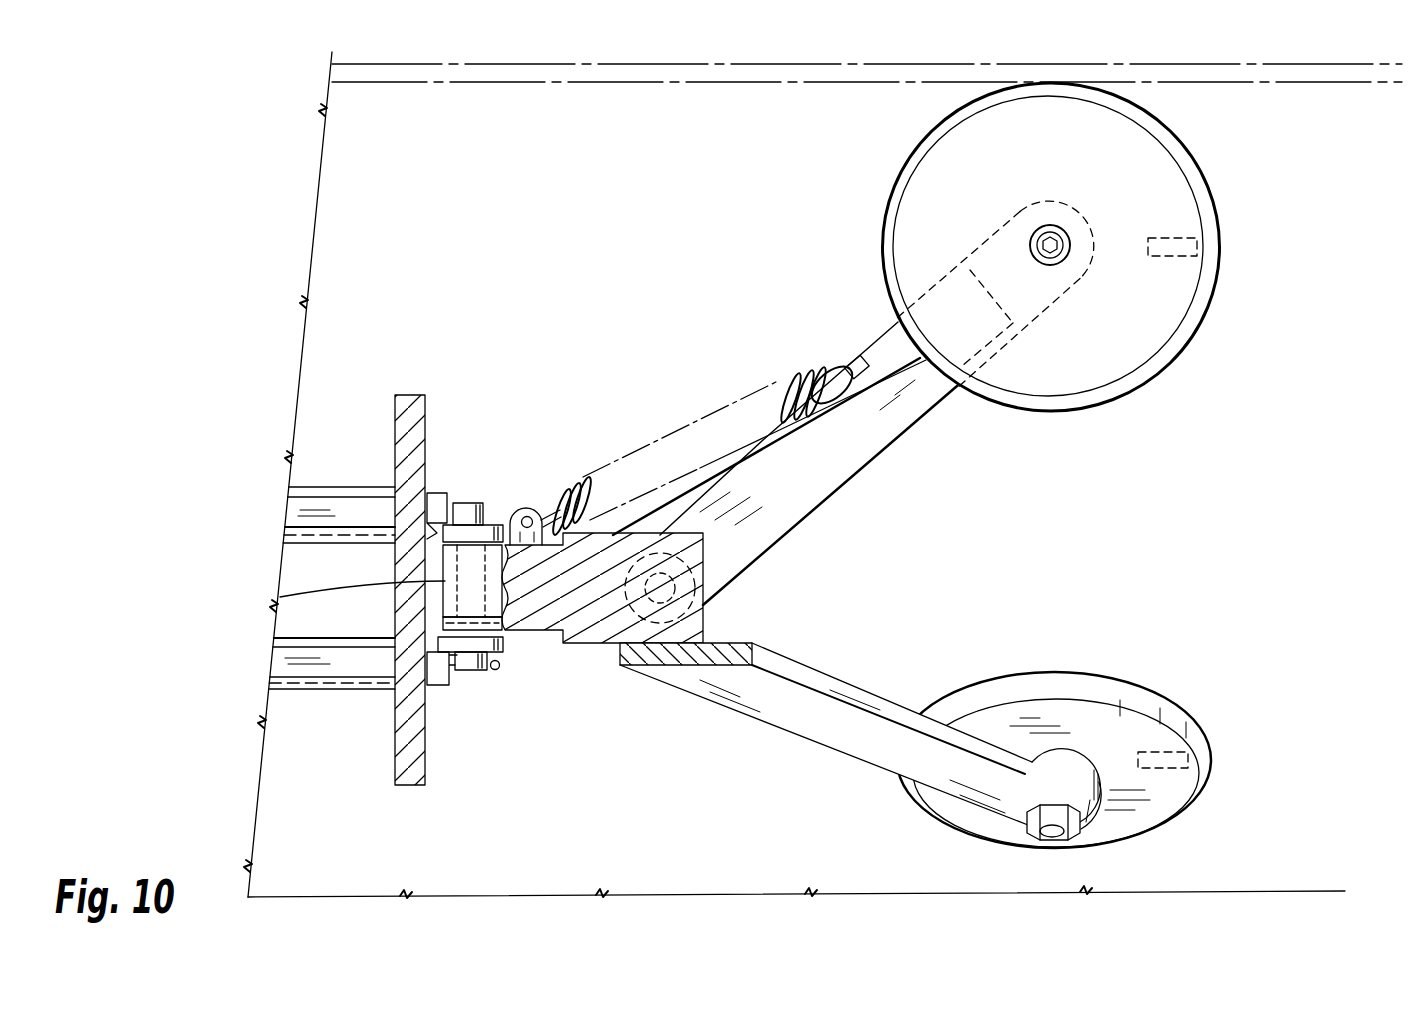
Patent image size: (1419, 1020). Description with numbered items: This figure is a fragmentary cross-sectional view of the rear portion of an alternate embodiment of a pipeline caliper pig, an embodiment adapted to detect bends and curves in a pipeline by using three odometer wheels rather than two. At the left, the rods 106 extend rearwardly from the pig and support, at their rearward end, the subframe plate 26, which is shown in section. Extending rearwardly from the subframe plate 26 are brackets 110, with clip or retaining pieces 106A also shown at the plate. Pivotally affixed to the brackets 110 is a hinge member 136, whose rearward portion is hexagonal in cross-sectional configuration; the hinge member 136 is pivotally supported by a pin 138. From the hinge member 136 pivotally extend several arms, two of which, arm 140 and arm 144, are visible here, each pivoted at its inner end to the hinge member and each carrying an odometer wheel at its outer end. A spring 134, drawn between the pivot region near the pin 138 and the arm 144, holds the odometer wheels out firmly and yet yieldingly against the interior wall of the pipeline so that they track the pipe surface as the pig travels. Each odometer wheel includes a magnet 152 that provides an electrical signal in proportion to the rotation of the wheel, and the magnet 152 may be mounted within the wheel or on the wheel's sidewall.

The subframe plate 26 is at (418, 423).
The rods 106 is at (345, 507).
The rail clip 106A is at (435, 495).
The brackets 110 is at (440, 533).
The springs 134 is at (781, 380).
The hinge member 136 is at (577, 634).
The pin 138 is at (472, 507).
The arm 140 is at (845, 737).
The arm 144 is at (850, 468).
The magnet 152 is at (1199, 243).